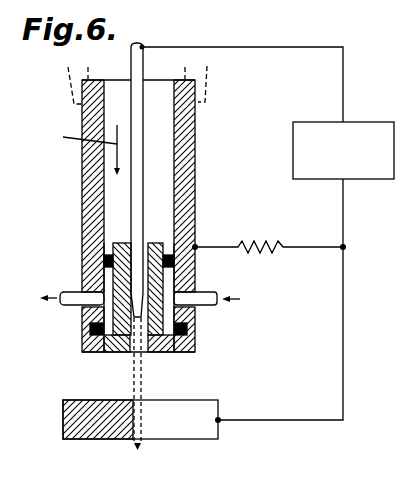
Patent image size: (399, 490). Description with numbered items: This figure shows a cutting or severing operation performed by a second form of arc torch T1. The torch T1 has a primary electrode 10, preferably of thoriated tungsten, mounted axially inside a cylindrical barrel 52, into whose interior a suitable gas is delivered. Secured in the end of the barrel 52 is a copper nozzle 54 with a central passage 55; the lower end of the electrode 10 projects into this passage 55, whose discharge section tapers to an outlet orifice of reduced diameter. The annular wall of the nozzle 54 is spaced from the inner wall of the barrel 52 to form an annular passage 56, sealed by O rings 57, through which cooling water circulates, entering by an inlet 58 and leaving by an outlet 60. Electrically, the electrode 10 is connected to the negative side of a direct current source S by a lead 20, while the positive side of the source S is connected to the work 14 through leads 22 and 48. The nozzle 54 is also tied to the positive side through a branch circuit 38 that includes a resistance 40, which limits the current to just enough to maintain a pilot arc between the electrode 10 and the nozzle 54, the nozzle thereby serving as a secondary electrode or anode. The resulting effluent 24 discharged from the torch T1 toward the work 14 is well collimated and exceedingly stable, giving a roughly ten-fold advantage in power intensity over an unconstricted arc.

The primary electrode 10 is at (131, 61).
The work 14 is at (105, 424).
The lead 20 is at (248, 47).
The lead 22 is at (343, 214).
The effluent 24 is at (149, 373).
The branch circuit 38 is at (317, 248).
The resistance 40 is at (243, 244).
The lead 48 is at (343, 338).
The cylindrical barrel 52 is at (196, 126).
The nozzle 54 is at (150, 280).
The central passage 55 is at (131, 285).
The annular passage 56 is at (110, 352).
The O rings 57 is at (107, 258).
The inlet 58 is at (205, 305).
The outlet 60 is at (73, 303).
The direct current source S is at (327, 124).
The torch T1 is at (204, 163).